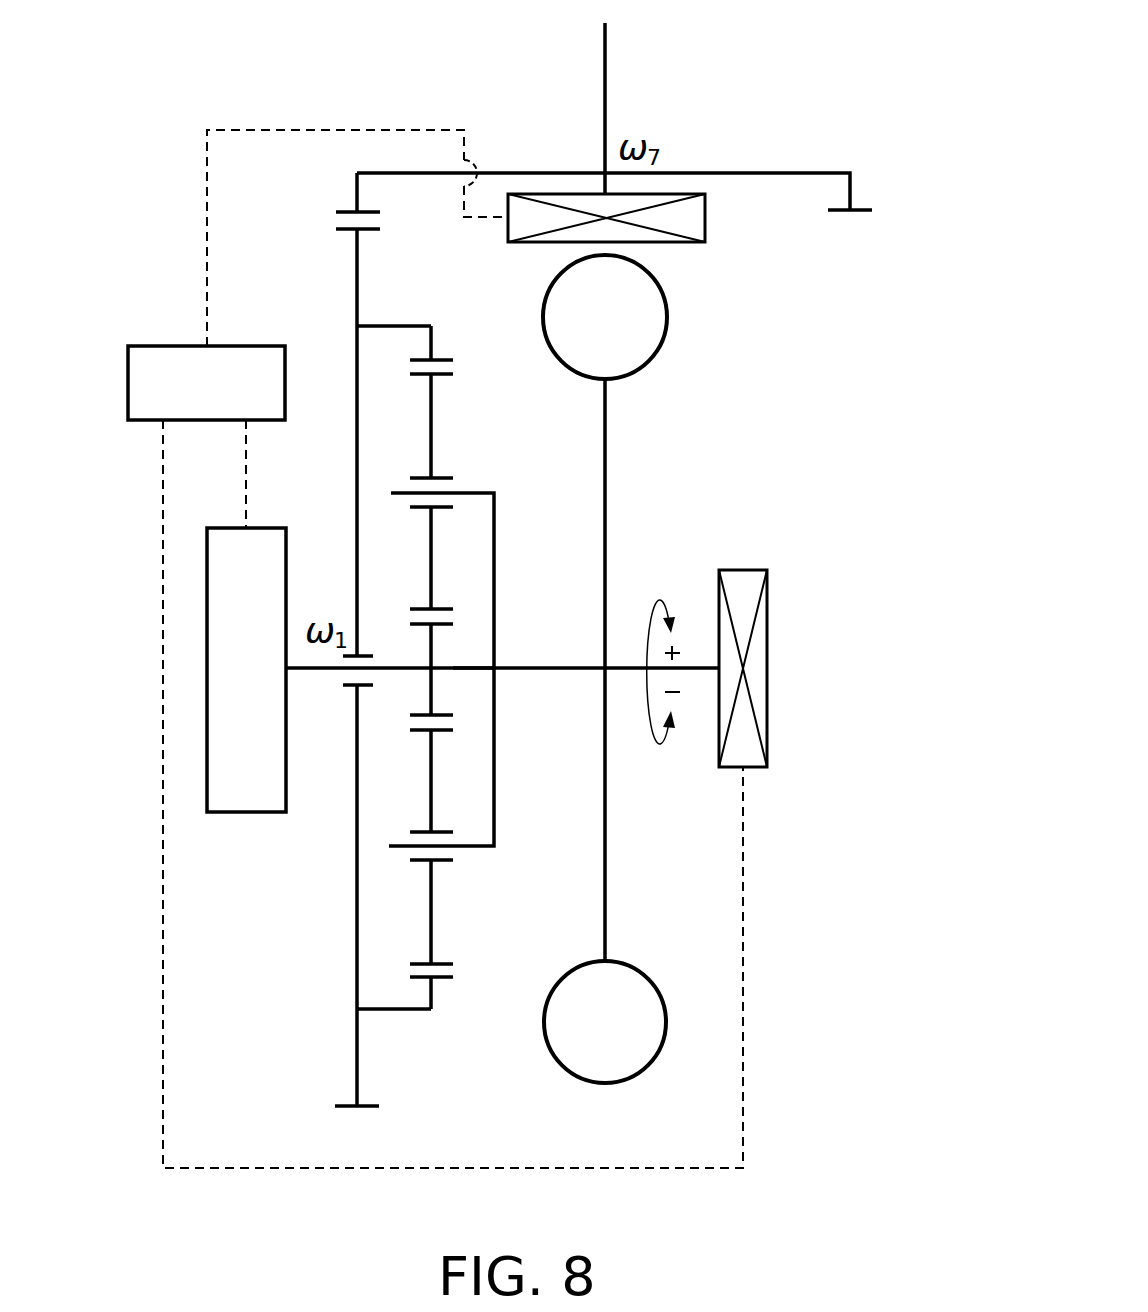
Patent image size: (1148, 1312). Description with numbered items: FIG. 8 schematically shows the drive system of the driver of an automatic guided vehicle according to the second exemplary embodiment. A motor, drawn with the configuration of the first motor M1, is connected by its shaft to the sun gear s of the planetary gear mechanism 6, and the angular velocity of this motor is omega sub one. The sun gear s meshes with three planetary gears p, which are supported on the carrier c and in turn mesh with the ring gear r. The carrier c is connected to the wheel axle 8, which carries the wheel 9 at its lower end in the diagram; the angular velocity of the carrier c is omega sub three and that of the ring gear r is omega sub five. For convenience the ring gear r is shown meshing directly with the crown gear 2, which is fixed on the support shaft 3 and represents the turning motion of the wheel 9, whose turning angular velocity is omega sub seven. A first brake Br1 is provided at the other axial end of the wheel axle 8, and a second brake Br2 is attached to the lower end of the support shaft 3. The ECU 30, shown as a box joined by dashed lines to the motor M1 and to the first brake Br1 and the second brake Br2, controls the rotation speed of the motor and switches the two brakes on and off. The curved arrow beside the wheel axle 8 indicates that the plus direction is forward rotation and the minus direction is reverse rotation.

The crown gear 2 is at (770, 175).
The support shaft 3 is at (605, 75).
The planetary gear mechanism 6 is at (425, 639).
The wheel axle 8 is at (582, 665).
The wheel 9 is at (640, 969).
The ECU 30 is at (254, 346).
The first motor M1 is at (263, 527).
The first brake Br1 is at (750, 568).
The second brake Br2 is at (688, 243).
The ring gear r is at (357, 285).
The planetary gears p is at (432, 430).
The carrier c is at (495, 576).
The sun gear s is at (432, 695).